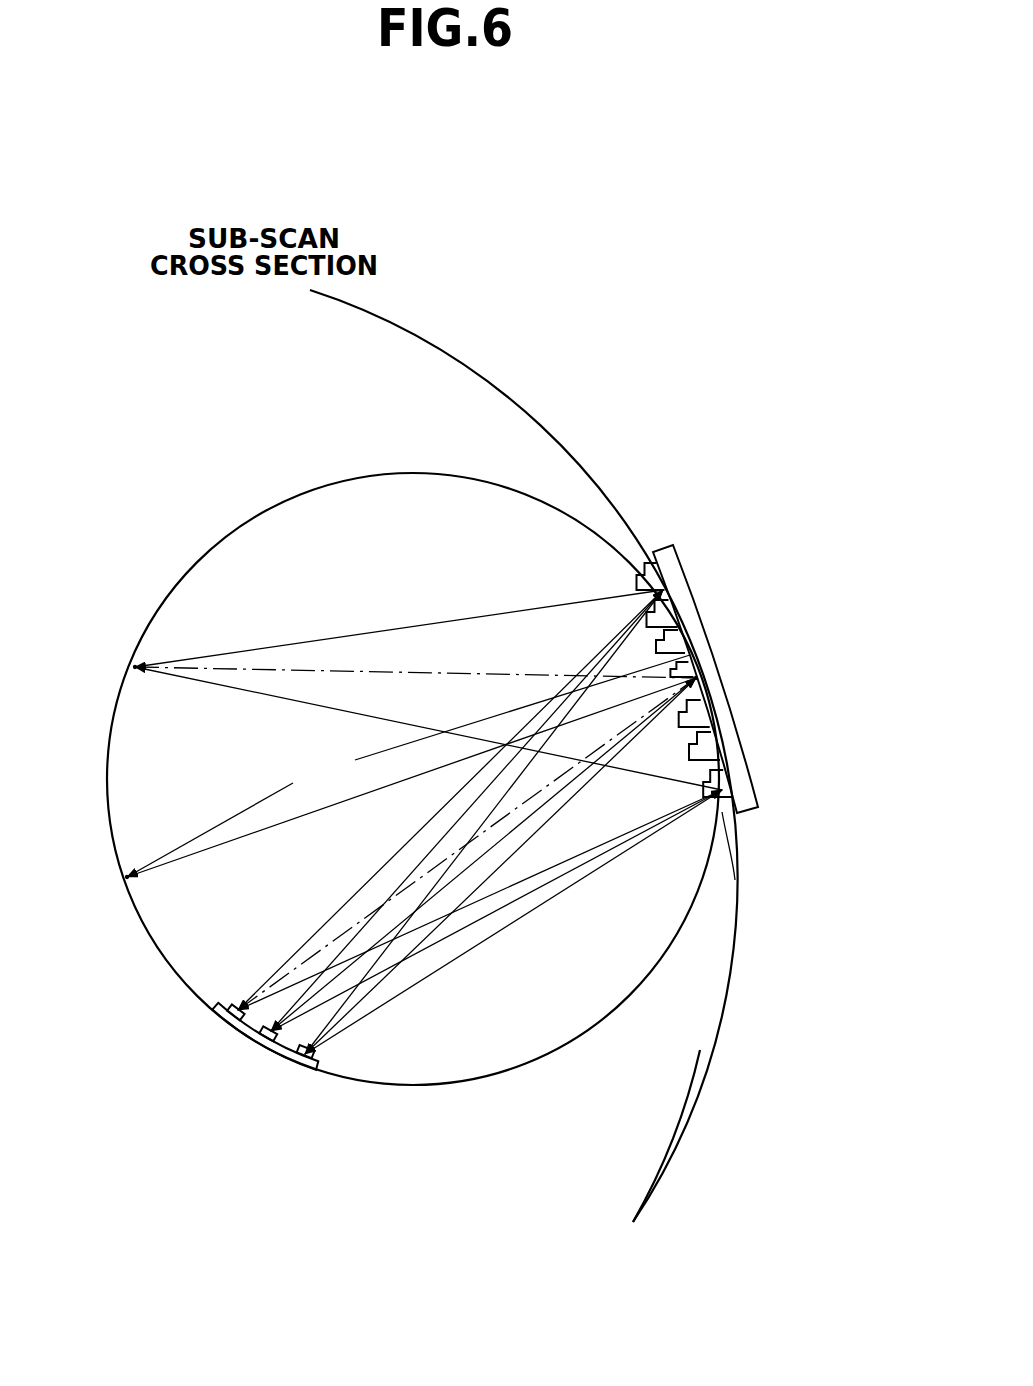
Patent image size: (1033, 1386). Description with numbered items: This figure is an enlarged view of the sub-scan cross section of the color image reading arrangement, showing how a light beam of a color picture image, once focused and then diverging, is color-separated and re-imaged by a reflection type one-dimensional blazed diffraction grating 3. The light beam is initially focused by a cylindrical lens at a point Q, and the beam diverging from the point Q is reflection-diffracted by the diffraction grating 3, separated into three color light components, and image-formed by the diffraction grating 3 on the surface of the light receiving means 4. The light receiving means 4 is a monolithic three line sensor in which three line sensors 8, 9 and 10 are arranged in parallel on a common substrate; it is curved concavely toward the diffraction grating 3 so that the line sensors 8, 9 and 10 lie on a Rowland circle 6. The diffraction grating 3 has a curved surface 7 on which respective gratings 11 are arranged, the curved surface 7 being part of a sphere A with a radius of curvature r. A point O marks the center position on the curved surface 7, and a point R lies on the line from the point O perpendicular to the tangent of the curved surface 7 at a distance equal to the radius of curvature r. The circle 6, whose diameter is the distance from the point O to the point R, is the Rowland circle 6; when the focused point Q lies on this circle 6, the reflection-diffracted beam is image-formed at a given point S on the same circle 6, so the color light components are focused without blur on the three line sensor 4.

The diffraction grating 3 is at (693, 572).
The light receiving means 4 is at (307, 1076).
The Rowland circle 6 is at (540, 1066).
The curved surface 7 is at (702, 1048).
The line sensor 8 is at (226, 1022).
The line sensor 9 is at (262, 1042).
The line sensor 10 is at (298, 1070).
The gratings 11 is at (733, 872).
The point O is at (703, 667).
The point Q is at (407, 690).
The point R is at (394, 787).
The point S is at (258, 1048).
The sphere A is at (666, 1130).
The radius of curvature r is at (504, 721).